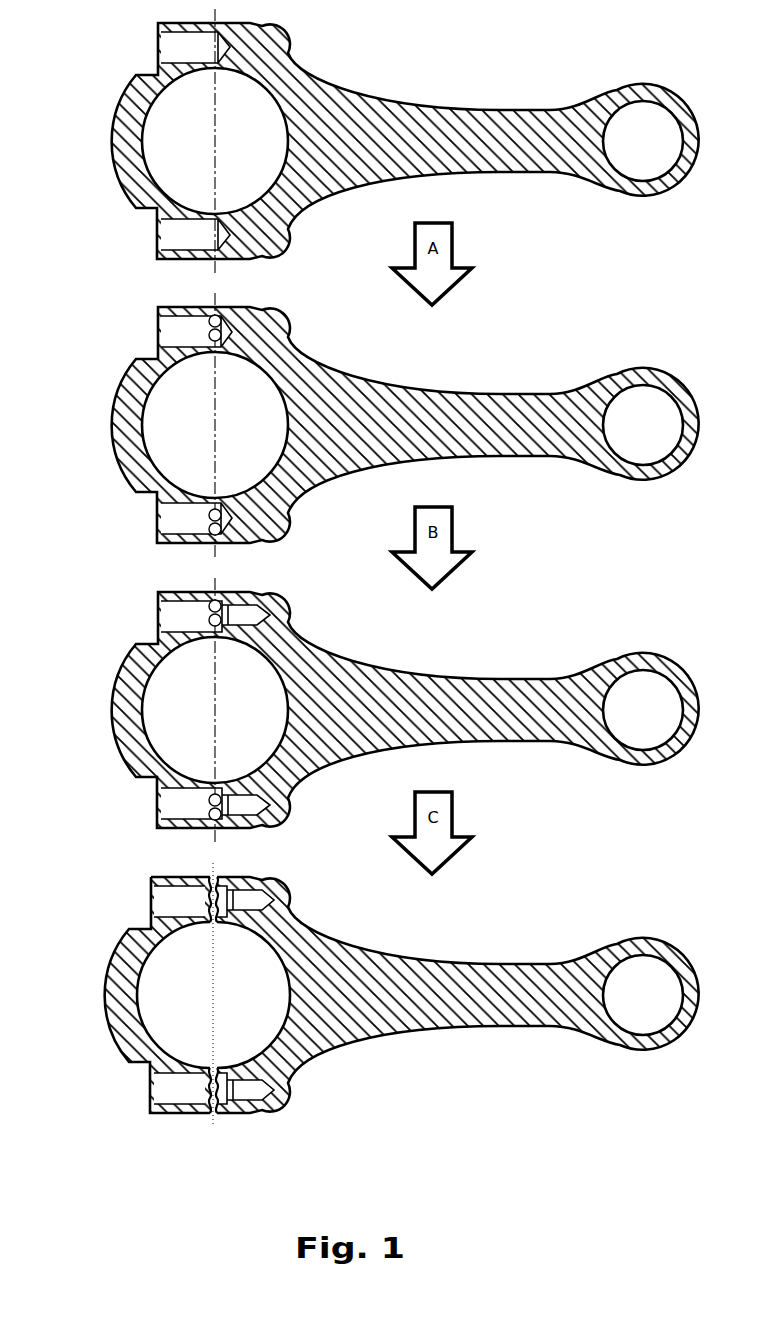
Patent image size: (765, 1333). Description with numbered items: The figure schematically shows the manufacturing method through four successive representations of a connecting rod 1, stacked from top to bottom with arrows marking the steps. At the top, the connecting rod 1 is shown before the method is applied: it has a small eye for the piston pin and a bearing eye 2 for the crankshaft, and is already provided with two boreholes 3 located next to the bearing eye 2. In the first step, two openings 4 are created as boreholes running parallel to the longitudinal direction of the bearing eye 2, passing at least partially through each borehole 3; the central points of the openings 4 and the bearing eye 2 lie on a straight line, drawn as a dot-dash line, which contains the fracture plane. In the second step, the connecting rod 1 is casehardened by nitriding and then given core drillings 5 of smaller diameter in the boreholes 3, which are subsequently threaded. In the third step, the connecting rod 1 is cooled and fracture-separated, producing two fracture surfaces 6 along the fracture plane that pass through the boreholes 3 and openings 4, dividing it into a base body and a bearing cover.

The connecting rod 1 is at (440, 137).
The bearing eye 2 is at (177, 133).
The boreholes 3 is at (188, 50).
The openings 4 is at (170, 508).
The core drillings 5 is at (268, 615).
The fracture surfaces 6 is at (213, 878).